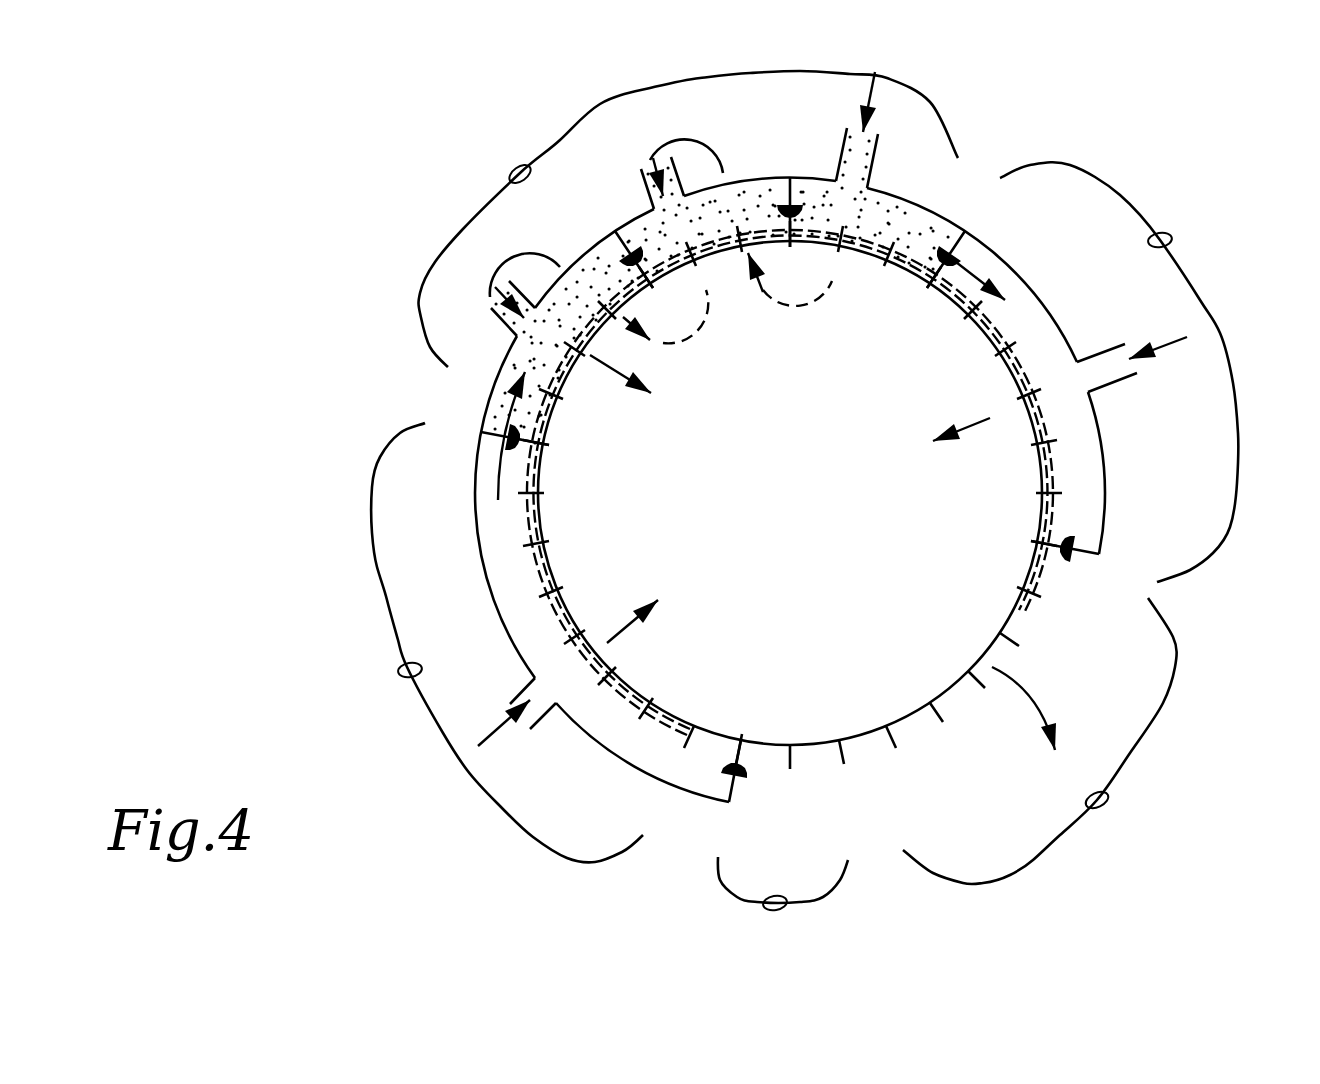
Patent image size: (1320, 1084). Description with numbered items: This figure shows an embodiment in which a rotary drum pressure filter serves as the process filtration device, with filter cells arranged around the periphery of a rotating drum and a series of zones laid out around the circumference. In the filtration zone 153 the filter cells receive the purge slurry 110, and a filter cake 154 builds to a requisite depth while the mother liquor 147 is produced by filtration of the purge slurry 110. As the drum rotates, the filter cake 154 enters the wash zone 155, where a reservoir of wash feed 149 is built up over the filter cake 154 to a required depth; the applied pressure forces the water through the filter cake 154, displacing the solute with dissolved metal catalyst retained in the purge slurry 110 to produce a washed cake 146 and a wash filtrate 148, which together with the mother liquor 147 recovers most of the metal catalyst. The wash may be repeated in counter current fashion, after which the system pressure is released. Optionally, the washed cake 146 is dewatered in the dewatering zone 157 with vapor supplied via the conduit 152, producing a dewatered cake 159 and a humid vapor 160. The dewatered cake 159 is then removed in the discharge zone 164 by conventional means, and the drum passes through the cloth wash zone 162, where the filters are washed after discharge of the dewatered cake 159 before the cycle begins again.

The purge slurry 110 is at (492, 742).
The washed cake 146 is at (973, 263).
The mother liquor 147 is at (625, 633).
The wash filtrate 148 is at (596, 358).
The wash feed 149 is at (872, 92).
The conduit 152 is at (1166, 344).
The filtration zone 153 is at (400, 668).
The filter cake 154 is at (505, 413).
The wash zone 155 is at (510, 174).
The dewatering zone 157 is at (1168, 240).
The dewatered cake 159 is at (1033, 690).
The humid vapor 160 is at (985, 418).
The cloth wash zone 162 is at (772, 906).
The discharge zone 164 is at (1108, 805).